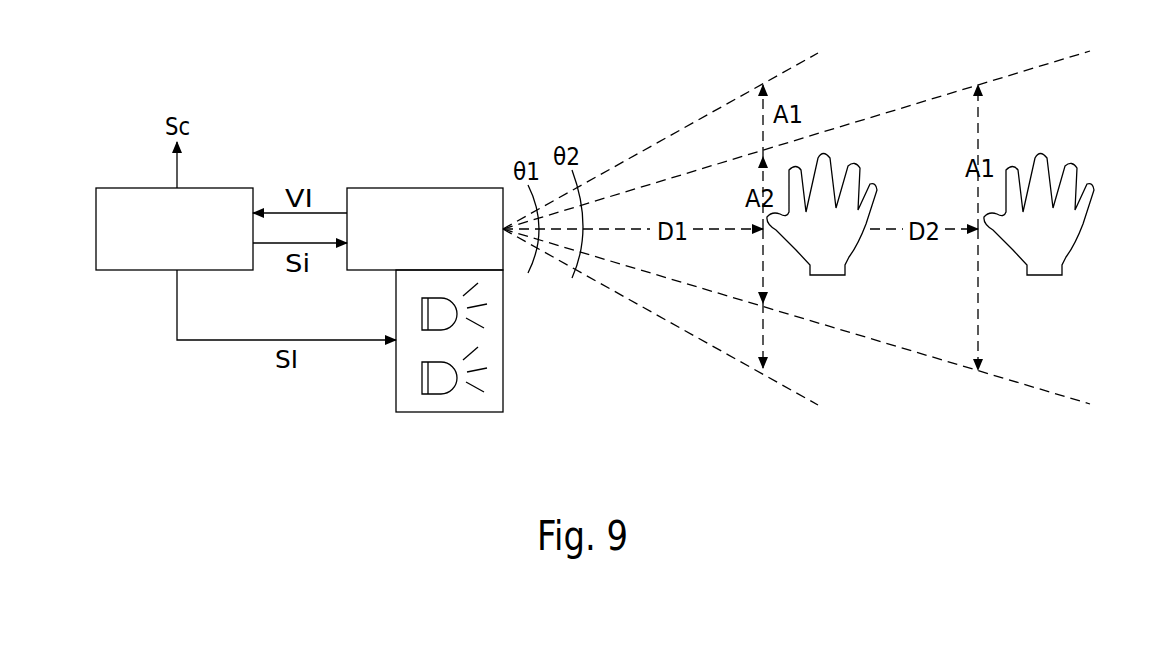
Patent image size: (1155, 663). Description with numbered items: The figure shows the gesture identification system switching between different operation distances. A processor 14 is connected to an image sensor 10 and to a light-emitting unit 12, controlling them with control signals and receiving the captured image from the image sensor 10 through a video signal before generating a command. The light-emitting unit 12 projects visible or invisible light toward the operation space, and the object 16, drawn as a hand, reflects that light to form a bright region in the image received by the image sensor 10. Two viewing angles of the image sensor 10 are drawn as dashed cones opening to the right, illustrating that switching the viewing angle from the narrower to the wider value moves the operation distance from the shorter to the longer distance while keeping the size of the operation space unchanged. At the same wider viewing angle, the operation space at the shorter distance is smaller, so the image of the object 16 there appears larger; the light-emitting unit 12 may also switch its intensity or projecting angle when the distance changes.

The image sensor 10 is at (425, 188).
The light-emitting unit 12 is at (503, 338).
The processor 14 is at (137, 271).
The object 16 is at (842, 248).